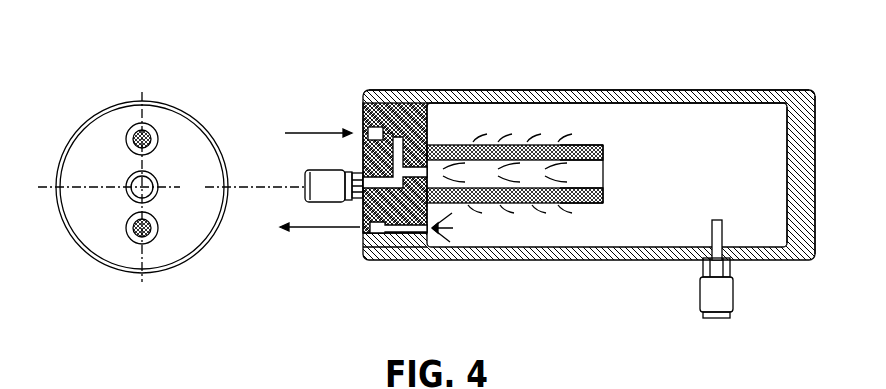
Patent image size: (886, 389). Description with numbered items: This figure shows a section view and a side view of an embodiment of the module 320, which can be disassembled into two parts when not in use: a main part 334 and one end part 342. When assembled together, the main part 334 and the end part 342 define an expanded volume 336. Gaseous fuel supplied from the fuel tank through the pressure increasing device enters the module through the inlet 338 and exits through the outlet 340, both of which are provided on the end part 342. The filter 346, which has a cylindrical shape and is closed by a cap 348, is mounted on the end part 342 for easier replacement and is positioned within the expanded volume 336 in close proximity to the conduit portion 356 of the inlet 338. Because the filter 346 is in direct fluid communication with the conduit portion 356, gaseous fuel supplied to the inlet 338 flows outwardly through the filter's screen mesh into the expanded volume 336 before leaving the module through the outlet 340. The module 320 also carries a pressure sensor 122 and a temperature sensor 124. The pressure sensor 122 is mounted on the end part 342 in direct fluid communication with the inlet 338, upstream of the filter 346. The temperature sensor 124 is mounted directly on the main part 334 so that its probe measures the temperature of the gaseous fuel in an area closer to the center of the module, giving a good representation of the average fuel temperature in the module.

The module 320 is at (588, 68).
The main part 334 is at (667, 90).
The expanded volume 336 is at (740, 132).
The conduit portion 356 is at (425, 93).
The end part 342 is at (367, 128).
The outlet 340 is at (368, 229).
The inlet 338 is at (153, 132).
The pressure sensor 122 is at (313, 167).
The filter 346 is at (497, 204).
The cap 348 is at (605, 204).
The temperature sensor 124 is at (723, 293).